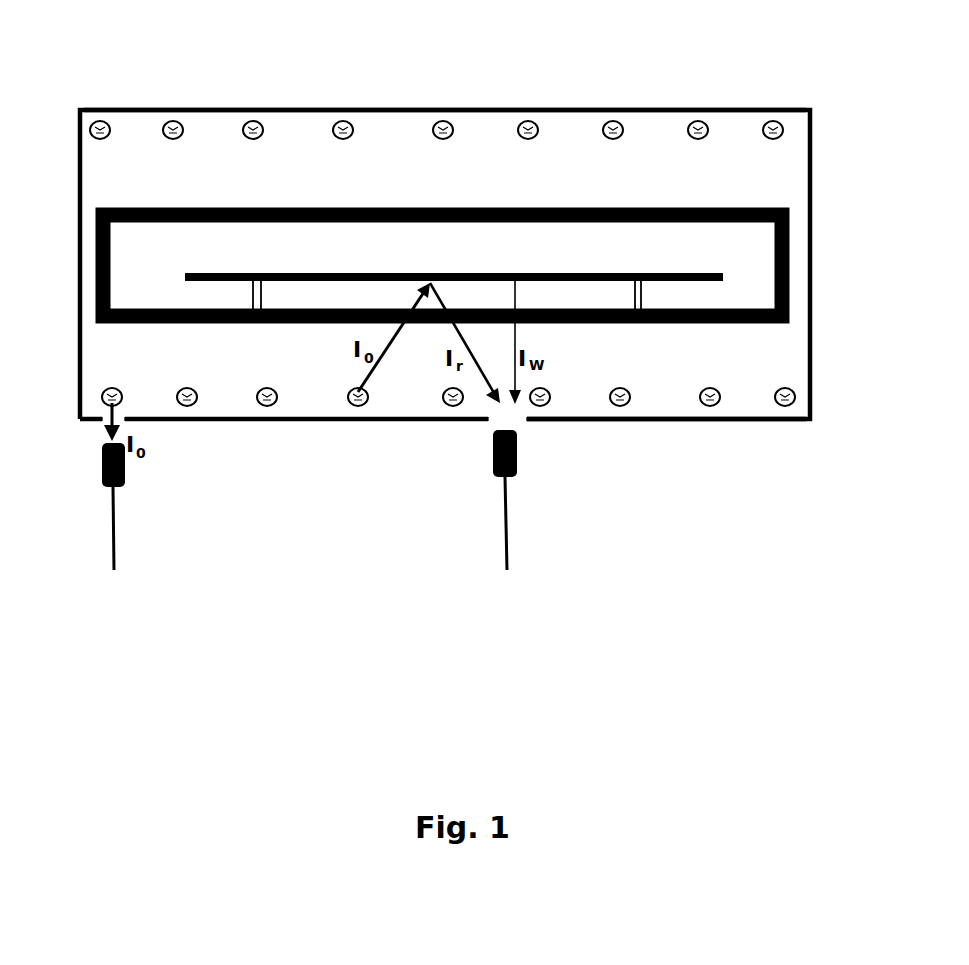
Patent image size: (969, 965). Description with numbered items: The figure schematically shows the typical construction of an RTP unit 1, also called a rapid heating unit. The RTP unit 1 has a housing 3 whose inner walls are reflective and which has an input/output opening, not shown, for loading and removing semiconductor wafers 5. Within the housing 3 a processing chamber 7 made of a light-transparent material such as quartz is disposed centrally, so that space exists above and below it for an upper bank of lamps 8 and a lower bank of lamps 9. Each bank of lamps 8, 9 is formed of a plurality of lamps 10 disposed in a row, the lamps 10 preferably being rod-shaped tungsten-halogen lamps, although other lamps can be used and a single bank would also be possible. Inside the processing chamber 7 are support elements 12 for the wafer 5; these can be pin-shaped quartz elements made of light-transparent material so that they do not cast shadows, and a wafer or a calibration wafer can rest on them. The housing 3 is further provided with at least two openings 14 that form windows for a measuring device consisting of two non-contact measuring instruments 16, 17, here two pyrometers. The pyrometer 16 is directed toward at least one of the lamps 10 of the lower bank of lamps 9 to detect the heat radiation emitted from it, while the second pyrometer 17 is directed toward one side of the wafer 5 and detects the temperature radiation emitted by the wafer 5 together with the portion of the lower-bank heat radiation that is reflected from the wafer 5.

The RTP unit 1 is at (243, 86).
The housing 3 is at (79, 385).
The semiconductor wafer 5 is at (707, 276).
The processing chamber 7 is at (94, 284).
The upper bank of lamps 8 is at (818, 131).
The lower bank of lamps 9 is at (818, 397).
The lamps 10 is at (774, 121).
The support elements 12 is at (641, 296).
The openings 14 is at (99, 420).
The pyrometer 16 is at (122, 482).
The second pyrometer 17 is at (518, 462).